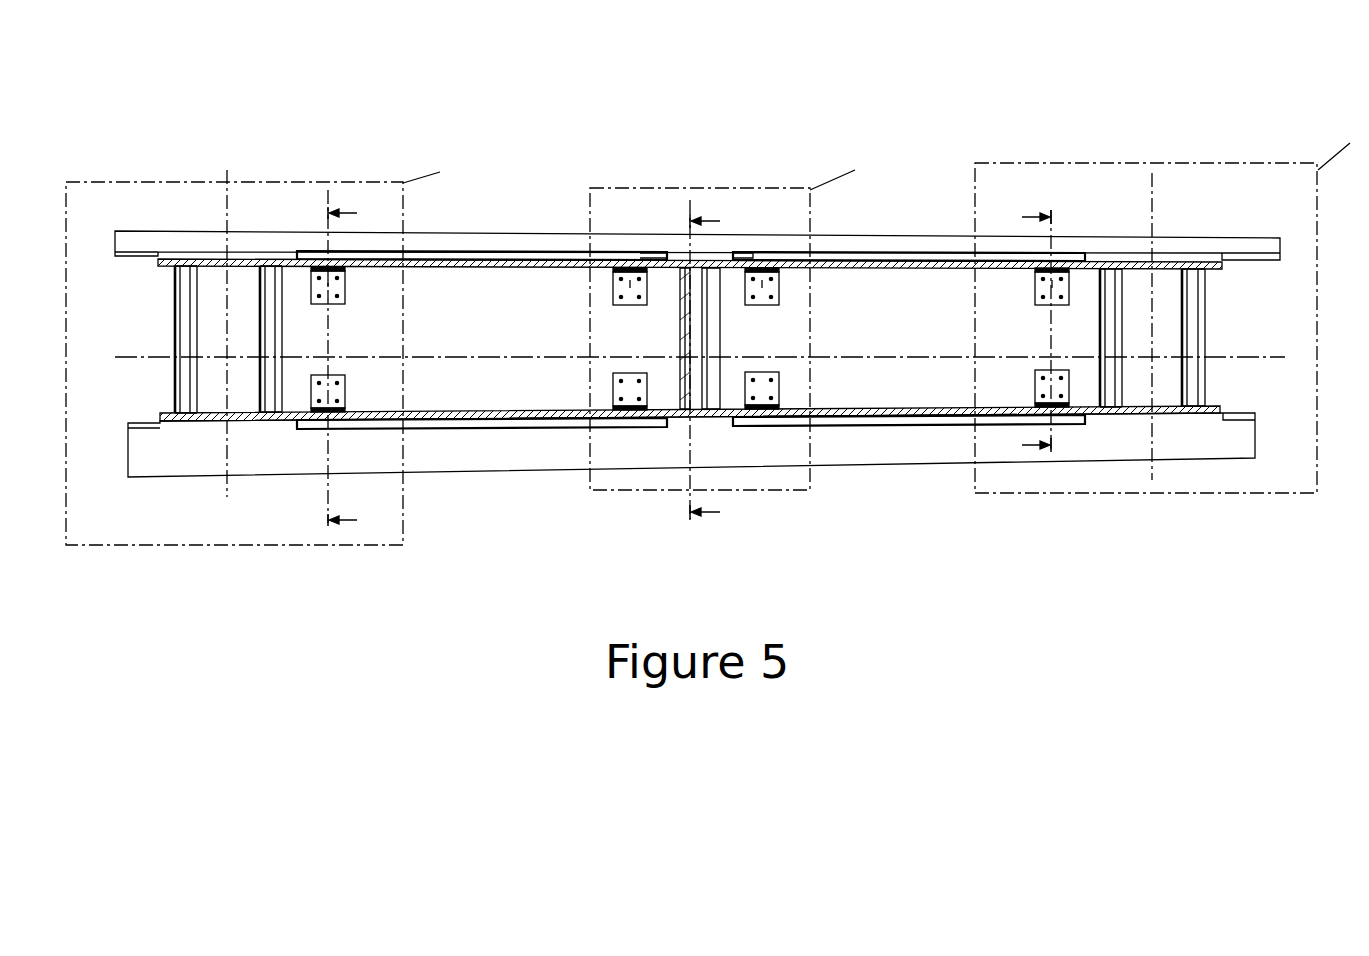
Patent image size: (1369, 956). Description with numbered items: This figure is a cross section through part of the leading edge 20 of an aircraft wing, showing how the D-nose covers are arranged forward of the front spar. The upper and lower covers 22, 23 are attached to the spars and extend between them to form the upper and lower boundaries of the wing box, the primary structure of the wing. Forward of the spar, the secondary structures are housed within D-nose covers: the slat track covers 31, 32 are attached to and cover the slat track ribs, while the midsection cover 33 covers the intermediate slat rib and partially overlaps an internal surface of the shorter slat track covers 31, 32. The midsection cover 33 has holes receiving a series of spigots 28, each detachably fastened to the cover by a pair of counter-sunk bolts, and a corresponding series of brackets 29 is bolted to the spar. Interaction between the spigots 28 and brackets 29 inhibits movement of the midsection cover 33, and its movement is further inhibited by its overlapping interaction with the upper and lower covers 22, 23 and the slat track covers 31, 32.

The leading edge 20 is at (168, 112).
The upper cover 22 is at (485, 240).
The lower cover 23 is at (488, 457).
The spigot 28 is at (343, 390).
The bracket 29 is at (633, 277).
The slat track cover 31 is at (177, 276).
The slat track cover 32 is at (1107, 414).
The midsection cover 33 is at (862, 422).